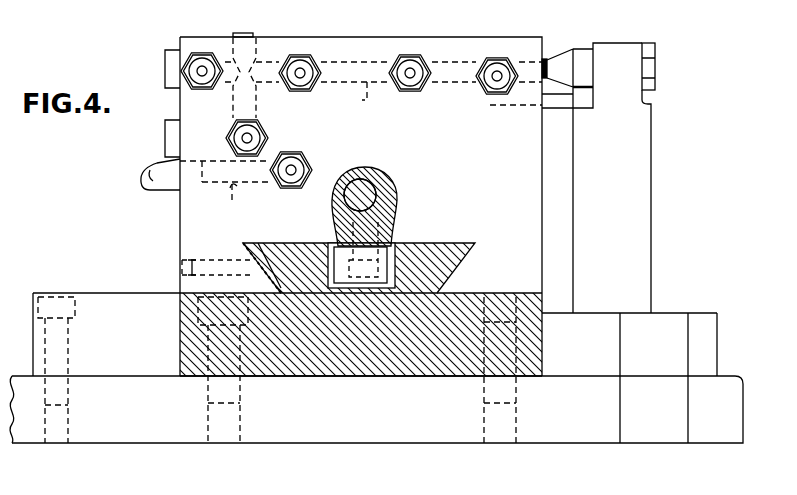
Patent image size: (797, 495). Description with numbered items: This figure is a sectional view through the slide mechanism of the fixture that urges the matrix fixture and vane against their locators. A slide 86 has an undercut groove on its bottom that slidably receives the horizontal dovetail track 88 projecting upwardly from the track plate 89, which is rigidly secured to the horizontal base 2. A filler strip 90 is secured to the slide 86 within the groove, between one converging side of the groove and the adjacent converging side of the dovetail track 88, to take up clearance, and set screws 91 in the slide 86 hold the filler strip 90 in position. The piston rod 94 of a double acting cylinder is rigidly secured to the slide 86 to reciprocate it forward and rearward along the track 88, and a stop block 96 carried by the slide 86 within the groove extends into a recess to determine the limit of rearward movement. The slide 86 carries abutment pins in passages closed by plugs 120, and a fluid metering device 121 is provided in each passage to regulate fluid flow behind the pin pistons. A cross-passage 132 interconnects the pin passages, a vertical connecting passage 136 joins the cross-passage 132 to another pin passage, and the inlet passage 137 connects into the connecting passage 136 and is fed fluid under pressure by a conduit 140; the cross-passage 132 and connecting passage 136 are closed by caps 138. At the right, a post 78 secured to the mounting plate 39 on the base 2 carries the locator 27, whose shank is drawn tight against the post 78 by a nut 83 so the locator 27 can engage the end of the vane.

The base 2 is at (117, 444).
The locator 27 is at (583, 50).
The mounting plate 39 is at (705, 360).
The post 78 is at (652, 262).
The nut 83 is at (655, 70).
The slide 86 is at (186, 237).
The dovetail track 88 is at (450, 266).
The track plate 89 is at (375, 376).
The filler strip 90 is at (263, 246).
The set screws 91 is at (218, 252).
The piston rod 94 is at (357, 198).
The stop block 96 is at (383, 263).
The plugs 120 is at (165, 130).
The fluid metering device 121 is at (204, 50).
The cross-passage 132 is at (383, 92).
The connecting passage 136 is at (262, 104).
The inlet passage 137 is at (225, 191).
The caps 138 is at (252, 36).
The conduit 140 is at (158, 190).